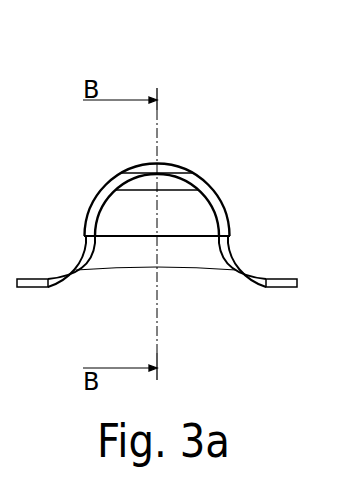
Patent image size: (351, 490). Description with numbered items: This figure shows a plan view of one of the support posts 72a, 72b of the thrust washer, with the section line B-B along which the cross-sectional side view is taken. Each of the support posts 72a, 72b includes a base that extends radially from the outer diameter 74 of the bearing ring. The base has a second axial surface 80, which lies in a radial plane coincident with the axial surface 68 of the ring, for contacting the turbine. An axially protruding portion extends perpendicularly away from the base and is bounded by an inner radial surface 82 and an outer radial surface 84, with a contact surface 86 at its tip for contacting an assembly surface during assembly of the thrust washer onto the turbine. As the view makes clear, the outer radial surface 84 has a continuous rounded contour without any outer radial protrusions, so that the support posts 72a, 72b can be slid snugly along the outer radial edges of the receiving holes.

The support post 72a is at (177, 82).
The support post 72b is at (177, 82).
The axial surface 68 is at (188, 277).
The outer diameter 74 is at (278, 277).
The second axial surface 80 is at (100, 247).
The inner radial surface 82 is at (125, 232).
The outer radial surface 84 is at (170, 161).
The contact surface 86 is at (150, 180).